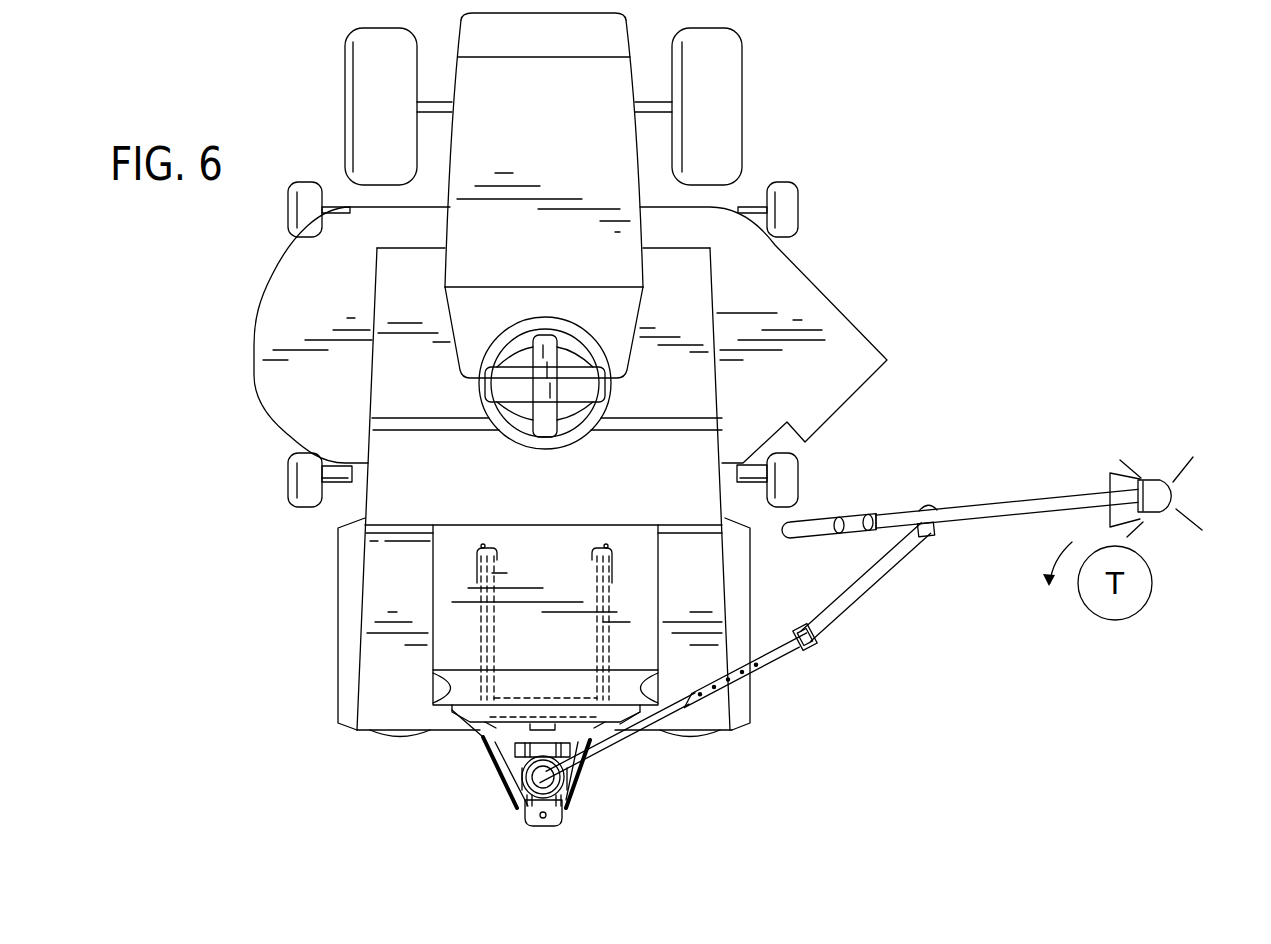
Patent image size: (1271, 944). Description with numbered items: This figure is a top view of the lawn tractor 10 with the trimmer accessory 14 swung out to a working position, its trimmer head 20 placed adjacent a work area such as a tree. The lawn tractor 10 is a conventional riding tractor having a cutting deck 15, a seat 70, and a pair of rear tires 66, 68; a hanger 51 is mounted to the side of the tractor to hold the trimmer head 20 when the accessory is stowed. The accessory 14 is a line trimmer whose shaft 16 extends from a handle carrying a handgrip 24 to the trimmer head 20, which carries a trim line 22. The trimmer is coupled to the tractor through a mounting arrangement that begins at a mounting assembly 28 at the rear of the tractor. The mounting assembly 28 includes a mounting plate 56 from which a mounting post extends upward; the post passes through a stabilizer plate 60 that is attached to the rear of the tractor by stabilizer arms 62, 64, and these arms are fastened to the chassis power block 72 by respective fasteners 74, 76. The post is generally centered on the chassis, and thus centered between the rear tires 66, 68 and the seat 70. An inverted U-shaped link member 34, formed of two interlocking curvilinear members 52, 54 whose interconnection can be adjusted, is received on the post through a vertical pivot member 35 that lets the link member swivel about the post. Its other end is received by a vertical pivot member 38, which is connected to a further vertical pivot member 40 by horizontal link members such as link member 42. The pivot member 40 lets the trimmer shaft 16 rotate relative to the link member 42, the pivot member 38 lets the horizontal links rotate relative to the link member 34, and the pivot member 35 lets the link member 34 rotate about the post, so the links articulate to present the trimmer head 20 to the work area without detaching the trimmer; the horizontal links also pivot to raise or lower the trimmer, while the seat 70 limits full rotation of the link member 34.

The lawn tractor 10 is at (275, 108).
The accessory 14 is at (1000, 480).
The cutting deck 15 is at (850, 343).
The shaft 16 is at (1020, 508).
The trimmer head 20 is at (1165, 494).
The trim line 22 is at (1182, 479).
The handgrip 24 is at (810, 528).
The mounting assembly 28 is at (490, 770).
The inverted U-shaped link member 34 is at (726, 735).
The vertical pivot member 35 is at (530, 808).
The vertical pivot member 38 is at (810, 648).
The vertical pivot member 40 is at (928, 506).
The horizontal link member 42 is at (868, 582).
The hanger 51 is at (735, 313).
The curvilinear member 52 is at (615, 740).
The curvilinear member 54 is at (757, 688).
The mounting plate 56 is at (560, 812).
The stabilizer plate 60 is at (492, 740).
The stabilizer arm 62 is at (481, 611).
The stabilizer arm 64 is at (610, 596).
The rear tire 66 is at (393, 740).
The rear tire 68 is at (703, 742).
The seat 70 is at (573, 525).
The power block 72 is at (520, 698).
The fastener 74 is at (472, 562).
The fastener 76 is at (620, 562).